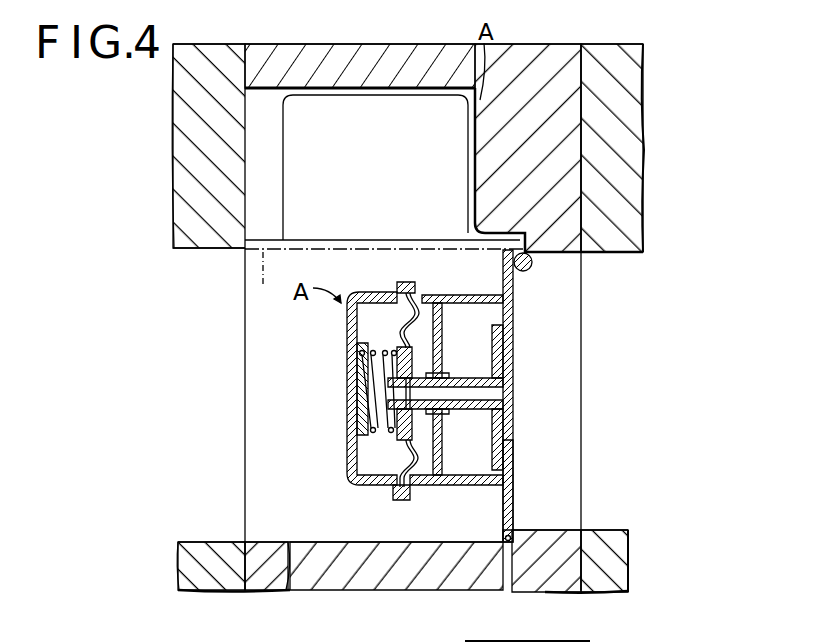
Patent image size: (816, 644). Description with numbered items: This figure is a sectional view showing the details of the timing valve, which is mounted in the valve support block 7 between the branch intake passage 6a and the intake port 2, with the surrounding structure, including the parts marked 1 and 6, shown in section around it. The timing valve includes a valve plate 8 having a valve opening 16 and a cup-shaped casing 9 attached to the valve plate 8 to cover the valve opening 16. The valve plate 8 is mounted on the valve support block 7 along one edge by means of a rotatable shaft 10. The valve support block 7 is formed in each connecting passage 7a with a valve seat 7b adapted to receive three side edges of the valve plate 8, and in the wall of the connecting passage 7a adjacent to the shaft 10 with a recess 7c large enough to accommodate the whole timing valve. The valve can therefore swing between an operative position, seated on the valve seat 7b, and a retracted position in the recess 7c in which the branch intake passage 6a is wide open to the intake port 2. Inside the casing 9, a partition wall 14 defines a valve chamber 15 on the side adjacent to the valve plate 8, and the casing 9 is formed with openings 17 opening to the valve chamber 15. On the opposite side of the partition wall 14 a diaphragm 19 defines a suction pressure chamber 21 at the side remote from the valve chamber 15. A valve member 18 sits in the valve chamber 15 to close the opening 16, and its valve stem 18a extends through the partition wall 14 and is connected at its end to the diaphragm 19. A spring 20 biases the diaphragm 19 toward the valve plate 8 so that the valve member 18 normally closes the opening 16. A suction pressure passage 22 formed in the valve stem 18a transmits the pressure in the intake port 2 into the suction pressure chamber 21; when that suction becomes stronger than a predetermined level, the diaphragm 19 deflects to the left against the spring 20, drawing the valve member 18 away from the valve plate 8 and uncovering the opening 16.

The cylinder block 1 is at (616, 48).
The intake port 2 is at (603, 510).
The gasket 6 is at (228, 46).
The branch intake passage 6a is at (192, 546).
The valve support block 7 is at (540, 46).
The connecting passage 7a is at (286, 590).
The valve seat 7b is at (506, 550).
The recess 7c is at (270, 97).
The valve plate 8 is at (510, 496).
The cup-shaped casing 9 is at (350, 382).
The rotatable shaft 10 is at (530, 269).
The partition wall 14 is at (433, 460).
The valve chamber 15 is at (493, 332).
The valve opening 16 is at (511, 368).
The openings 17 is at (468, 300).
The valve member 18 is at (505, 410).
The valve stem 18a is at (470, 410).
The diaphragm 19 is at (395, 476).
The spring 20 is at (380, 432).
The suction pressure chamber 21 is at (358, 470).
The suction pressure passage 22 is at (468, 388).